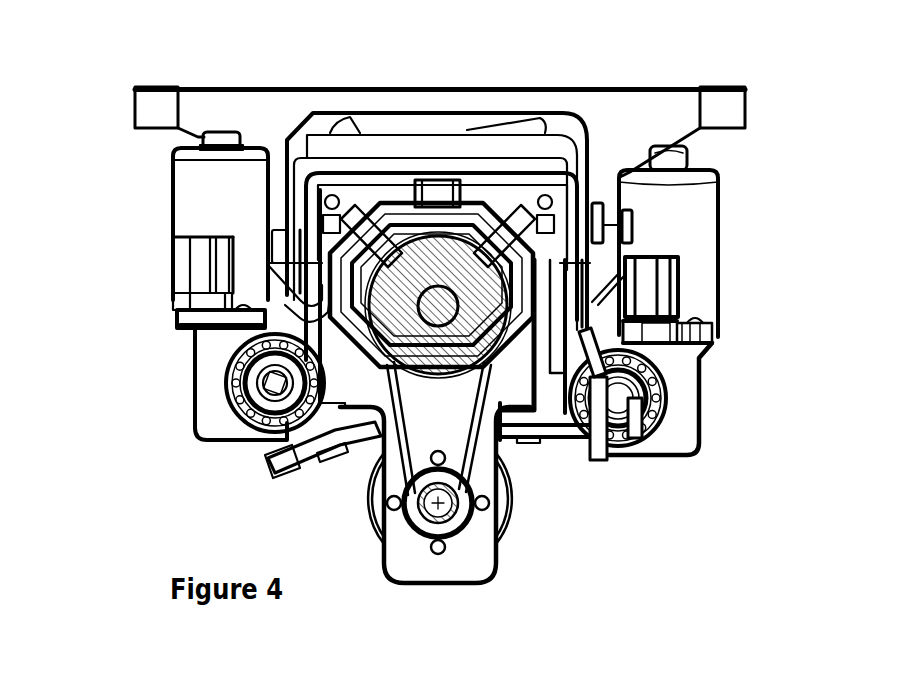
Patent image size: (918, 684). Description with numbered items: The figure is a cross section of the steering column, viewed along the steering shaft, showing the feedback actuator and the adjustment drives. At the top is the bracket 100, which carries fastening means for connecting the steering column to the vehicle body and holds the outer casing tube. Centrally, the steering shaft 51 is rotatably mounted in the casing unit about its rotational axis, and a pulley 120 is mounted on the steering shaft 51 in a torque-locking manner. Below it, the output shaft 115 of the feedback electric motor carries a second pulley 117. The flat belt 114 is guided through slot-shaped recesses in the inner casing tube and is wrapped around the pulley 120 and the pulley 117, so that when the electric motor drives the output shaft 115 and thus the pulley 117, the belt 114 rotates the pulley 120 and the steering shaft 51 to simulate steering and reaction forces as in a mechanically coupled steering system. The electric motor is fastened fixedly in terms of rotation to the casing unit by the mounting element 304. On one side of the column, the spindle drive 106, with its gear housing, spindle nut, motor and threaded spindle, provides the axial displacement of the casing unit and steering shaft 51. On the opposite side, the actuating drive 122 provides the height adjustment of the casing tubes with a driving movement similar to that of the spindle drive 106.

The bracket 100 is at (480, 100).
The pulley 120 is at (403, 193).
The steering shaft 51 is at (441, 297).
The actuating drive 122 is at (738, 342).
The spindle drive 106 is at (158, 398).
The flat belt 114 is at (480, 443).
The mounting element 304 is at (483, 527).
The pulley 117 is at (462, 527).
The output shaft 115 is at (420, 513).